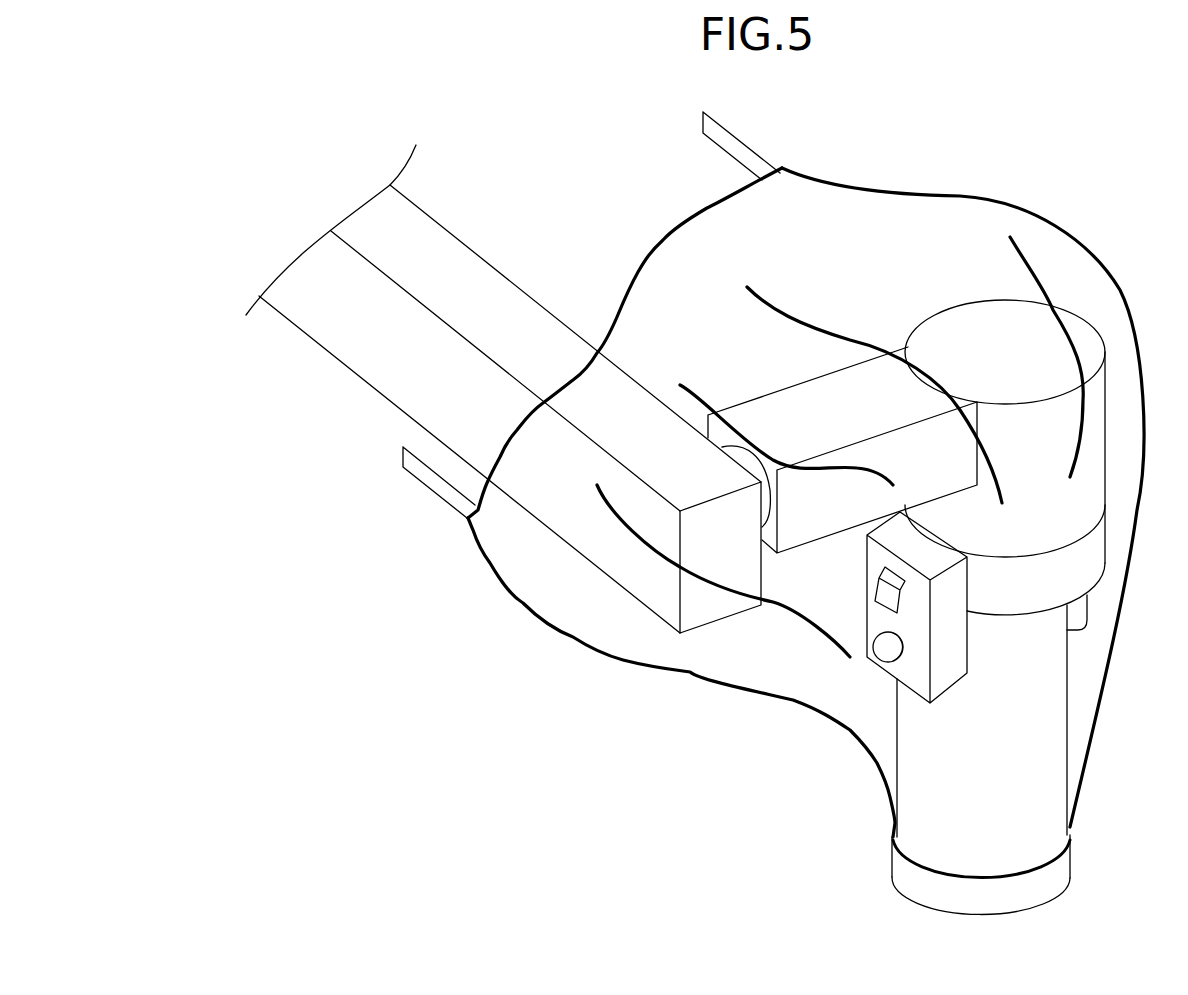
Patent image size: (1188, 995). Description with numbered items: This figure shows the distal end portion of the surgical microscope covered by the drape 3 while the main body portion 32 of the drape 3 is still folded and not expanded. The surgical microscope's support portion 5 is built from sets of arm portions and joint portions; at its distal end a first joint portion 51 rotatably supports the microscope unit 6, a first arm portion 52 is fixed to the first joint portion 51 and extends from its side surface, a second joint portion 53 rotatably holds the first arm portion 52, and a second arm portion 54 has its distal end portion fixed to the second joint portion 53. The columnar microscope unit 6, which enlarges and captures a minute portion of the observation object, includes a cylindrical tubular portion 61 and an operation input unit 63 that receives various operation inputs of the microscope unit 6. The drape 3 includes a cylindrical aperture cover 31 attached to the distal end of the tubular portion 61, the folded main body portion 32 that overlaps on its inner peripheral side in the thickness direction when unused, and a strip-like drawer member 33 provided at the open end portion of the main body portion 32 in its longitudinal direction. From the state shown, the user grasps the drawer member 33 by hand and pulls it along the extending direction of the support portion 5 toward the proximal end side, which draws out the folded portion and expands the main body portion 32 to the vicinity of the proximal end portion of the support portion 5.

The drape 3 is at (1108, 267).
The aperture cover 31 is at (1060, 868).
The main body portion 32 is at (648, 665).
The drawer member 33 is at (747, 146).
The support portion 5 is at (958, 325).
The first joint portion 51 is at (1067, 322).
The first arm portion 52 is at (853, 375).
The second joint portion 53 is at (738, 407).
The second arm portion 54 is at (555, 337).
The microscope unit 6 is at (939, 674).
The tubular portion 61 is at (1067, 723).
The operation input unit 63 is at (880, 617).